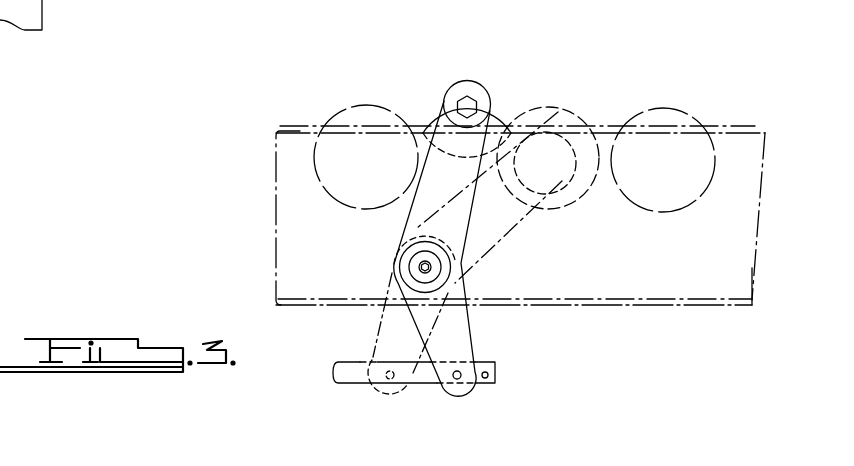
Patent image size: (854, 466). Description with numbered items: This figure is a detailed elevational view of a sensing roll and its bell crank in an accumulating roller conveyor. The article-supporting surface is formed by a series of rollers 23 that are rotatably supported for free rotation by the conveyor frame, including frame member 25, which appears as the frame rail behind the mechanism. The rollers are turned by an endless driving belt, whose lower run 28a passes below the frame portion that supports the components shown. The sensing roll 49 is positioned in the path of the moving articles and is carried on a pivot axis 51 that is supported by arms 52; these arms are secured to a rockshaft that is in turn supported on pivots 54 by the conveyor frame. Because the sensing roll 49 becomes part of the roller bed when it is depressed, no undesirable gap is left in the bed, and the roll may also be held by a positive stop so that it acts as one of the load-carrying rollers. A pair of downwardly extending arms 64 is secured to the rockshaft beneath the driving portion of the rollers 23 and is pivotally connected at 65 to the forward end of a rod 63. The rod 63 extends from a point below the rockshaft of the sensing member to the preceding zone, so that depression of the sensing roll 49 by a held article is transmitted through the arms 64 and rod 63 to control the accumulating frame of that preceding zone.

The rollers 23 is at (683, 110).
The frame member 25 is at (612, 282).
The lower run of the belt 28a is at (220, 7).
The sensing roll 49 is at (467, 62).
The pivot axis 51 is at (475, 98).
The arms 52 is at (482, 117).
The pivots 54 is at (432, 267).
The rod 63 is at (352, 383).
The downwardly extending arms 64 is at (463, 340).
The pivotal connection 65 is at (459, 379).